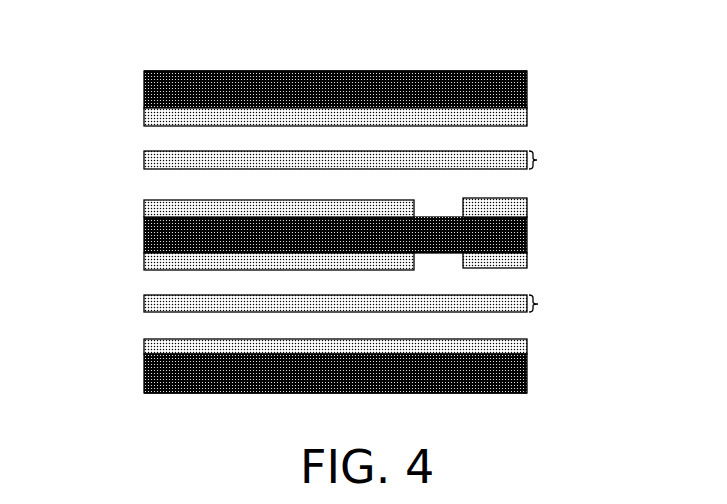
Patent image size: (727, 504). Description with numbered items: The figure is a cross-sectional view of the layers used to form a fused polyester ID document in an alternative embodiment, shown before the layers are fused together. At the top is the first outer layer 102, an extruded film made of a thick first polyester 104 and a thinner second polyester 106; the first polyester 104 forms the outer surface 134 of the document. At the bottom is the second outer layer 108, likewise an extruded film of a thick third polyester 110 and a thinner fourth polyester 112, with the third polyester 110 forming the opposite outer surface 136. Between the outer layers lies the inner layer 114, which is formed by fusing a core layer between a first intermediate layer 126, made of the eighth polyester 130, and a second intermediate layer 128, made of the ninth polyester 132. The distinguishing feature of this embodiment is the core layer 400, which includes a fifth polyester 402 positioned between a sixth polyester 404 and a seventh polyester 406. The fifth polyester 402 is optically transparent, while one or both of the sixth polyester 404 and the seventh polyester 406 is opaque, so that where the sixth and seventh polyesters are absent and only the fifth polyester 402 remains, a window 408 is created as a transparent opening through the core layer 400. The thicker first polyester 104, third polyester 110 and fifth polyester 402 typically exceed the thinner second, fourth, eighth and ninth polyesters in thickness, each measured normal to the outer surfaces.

The first outer layer 102 is at (345, 68).
The first polyester 104 is at (144, 90).
The second polyester 106 is at (144, 115).
The second outer layer 108 is at (349, 400).
The third polyester 110 is at (144, 372).
The fourth polyester 112 is at (144, 352).
The inner layer 114 is at (346, 230).
The first intermediate layer 126 is at (540, 160).
The second intermediate layer 128 is at (539, 304).
The eighth polyester 130 is at (144, 154).
The ninth polyester 132 is at (144, 303).
The outer surface 134 is at (366, 71).
The outer surface 136 is at (343, 427).
The core layer 400 is at (304, 231).
The fifth polyester 402 is at (144, 236).
The sixth polyester 404 is at (144, 210).
The seventh polyester 406 is at (144, 267).
The window 408 is at (447, 214).